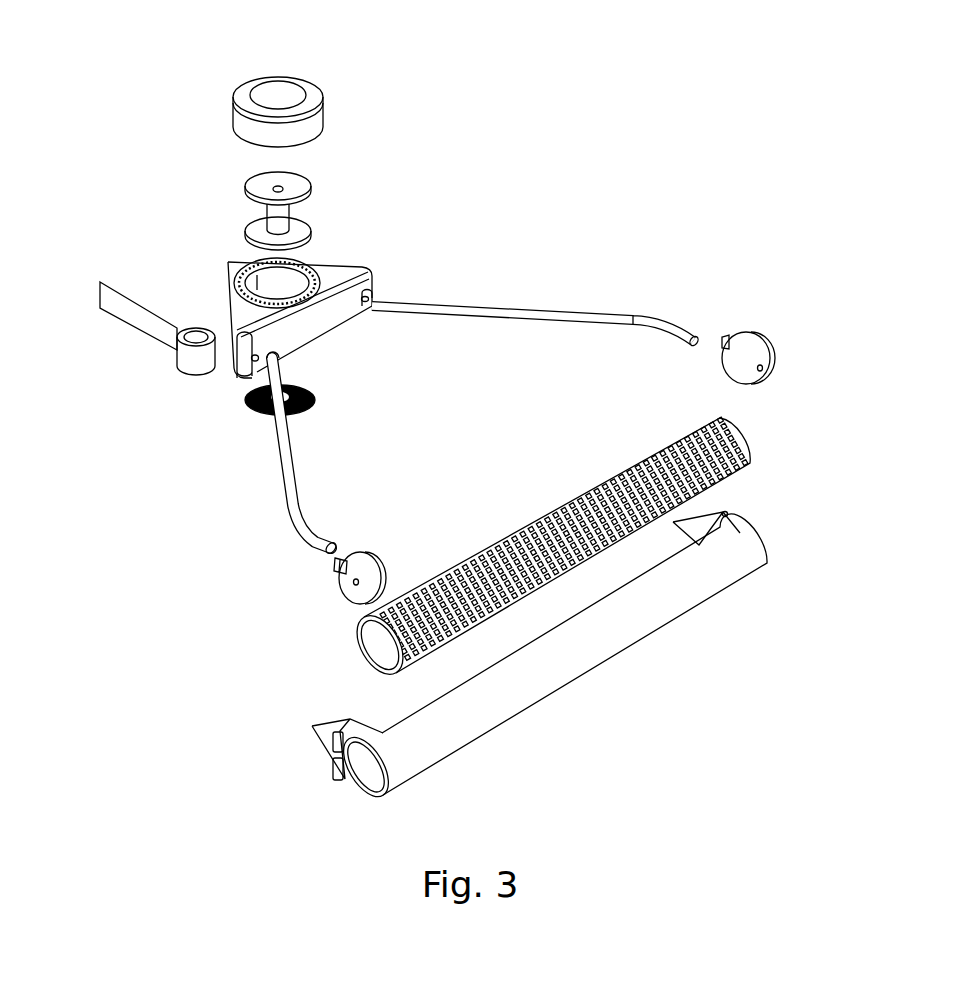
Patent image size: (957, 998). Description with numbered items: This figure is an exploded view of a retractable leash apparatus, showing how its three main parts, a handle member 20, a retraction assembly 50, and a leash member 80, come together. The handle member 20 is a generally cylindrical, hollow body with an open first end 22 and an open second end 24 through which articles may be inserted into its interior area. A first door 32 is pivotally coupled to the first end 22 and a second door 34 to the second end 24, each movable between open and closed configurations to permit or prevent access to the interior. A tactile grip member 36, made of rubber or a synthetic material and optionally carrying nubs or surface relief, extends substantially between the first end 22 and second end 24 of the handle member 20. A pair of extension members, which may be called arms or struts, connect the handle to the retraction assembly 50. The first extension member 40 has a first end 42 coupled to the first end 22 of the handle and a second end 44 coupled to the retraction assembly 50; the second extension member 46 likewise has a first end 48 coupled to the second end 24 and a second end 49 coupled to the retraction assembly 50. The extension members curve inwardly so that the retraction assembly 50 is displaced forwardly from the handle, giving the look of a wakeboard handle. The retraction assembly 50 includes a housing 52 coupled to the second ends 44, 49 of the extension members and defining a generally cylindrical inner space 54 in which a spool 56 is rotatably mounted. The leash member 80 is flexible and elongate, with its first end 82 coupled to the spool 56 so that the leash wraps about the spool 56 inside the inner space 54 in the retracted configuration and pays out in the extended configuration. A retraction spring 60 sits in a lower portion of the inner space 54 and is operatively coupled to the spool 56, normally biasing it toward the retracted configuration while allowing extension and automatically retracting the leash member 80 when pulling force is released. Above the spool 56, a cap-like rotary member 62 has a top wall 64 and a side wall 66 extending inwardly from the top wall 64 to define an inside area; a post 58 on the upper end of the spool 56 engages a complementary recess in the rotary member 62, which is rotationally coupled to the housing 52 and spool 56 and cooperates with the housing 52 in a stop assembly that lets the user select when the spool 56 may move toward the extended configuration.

The handle member 20 is at (570, 676).
The first end 22 is at (369, 779).
The second end 24 is at (570, 676).
The first door 32 is at (352, 591).
The second door 34 is at (770, 350).
The tactile grip member 36 is at (540, 500).
The first extension member 40 is at (310, 451).
The first end of first extension member 42 is at (338, 546).
The second end of first extension member 44 is at (280, 358).
The second extension member 46 is at (566, 307).
The first end of second extension member 48 is at (703, 337).
The second end of second extension member 49 is at (378, 303).
The retraction assembly 50 is at (338, 270).
The housing 52 is at (338, 320).
The inner space 54 is at (306, 278).
The spool 56 is at (263, 197).
The post 58 is at (281, 188).
The retraction spring 60 is at (247, 400).
The rotary member 62 is at (267, 79).
The top wall 64 is at (274, 92).
The side wall 66 is at (237, 121).
The leash member 80 is at (108, 300).
The first end of leash member 82 is at (198, 332).